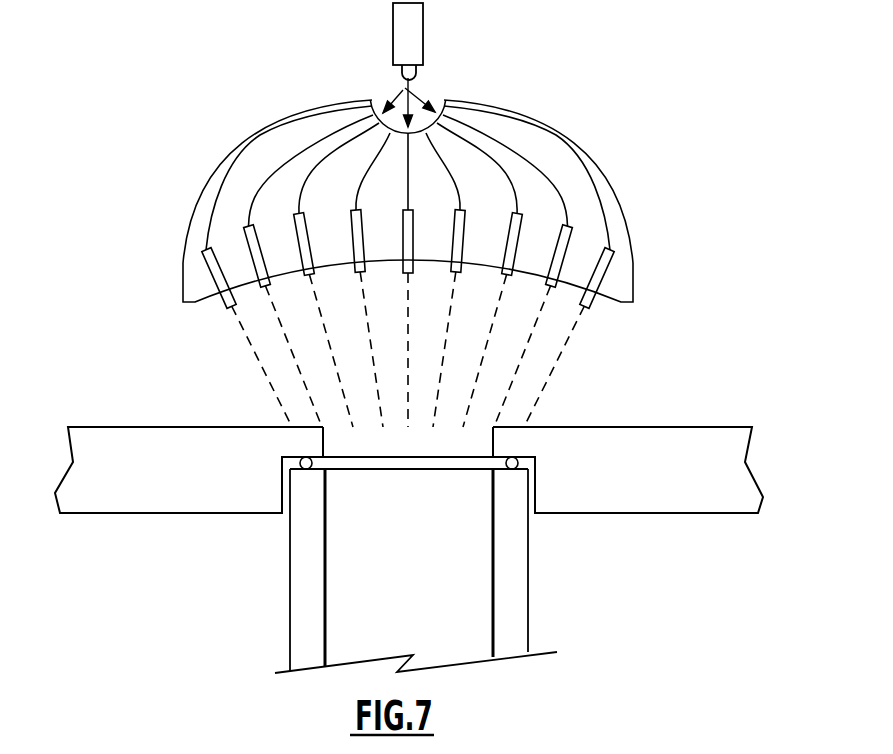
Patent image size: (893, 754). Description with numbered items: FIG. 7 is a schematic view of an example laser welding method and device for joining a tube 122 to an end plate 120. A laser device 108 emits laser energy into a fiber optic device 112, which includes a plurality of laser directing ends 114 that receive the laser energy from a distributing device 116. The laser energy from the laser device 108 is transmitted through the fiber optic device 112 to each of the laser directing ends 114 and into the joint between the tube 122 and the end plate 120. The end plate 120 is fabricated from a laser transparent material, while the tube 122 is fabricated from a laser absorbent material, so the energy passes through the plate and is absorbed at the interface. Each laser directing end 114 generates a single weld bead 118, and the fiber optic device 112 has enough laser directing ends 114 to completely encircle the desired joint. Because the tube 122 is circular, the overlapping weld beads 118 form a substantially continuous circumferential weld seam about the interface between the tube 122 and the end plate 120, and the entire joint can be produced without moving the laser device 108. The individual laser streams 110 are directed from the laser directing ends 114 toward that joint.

The laser device 108 is at (415, 42).
The spray streams 110 is at (585, 343).
The fiber optic device 112 is at (556, 93).
The laser directing ends 114 is at (360, 272).
The distributing device 116 is at (397, 118).
The weld bead 118 is at (512, 476).
The end plate 120 is at (190, 498).
The tube 122 is at (307, 590).